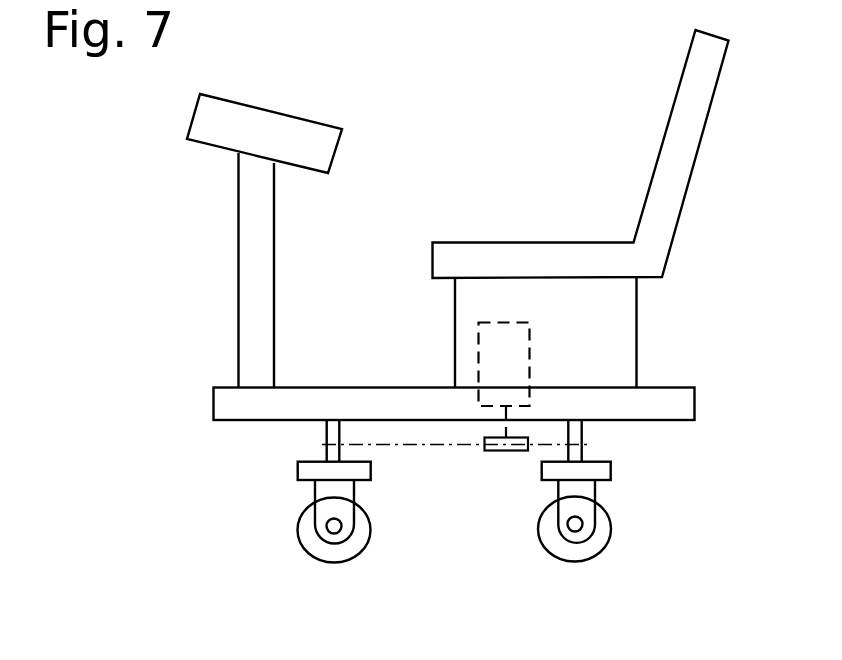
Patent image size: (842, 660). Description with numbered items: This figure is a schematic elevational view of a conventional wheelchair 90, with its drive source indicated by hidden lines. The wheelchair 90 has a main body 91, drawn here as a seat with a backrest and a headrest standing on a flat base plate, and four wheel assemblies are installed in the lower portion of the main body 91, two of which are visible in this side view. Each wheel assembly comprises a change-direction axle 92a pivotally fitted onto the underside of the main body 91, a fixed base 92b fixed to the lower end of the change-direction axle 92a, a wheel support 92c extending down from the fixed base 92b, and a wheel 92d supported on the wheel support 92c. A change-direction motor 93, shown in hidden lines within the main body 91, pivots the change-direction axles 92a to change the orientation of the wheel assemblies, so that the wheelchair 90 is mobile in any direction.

The wheelchair 90 is at (452, 93).
The main body 91 is at (685, 408).
The change-direction axle 92a is at (327, 430).
The fixed base 92b is at (304, 473).
The wheel support 92c is at (320, 506).
The wheel 92d is at (321, 558).
The change-direction motor 93 is at (530, 343).